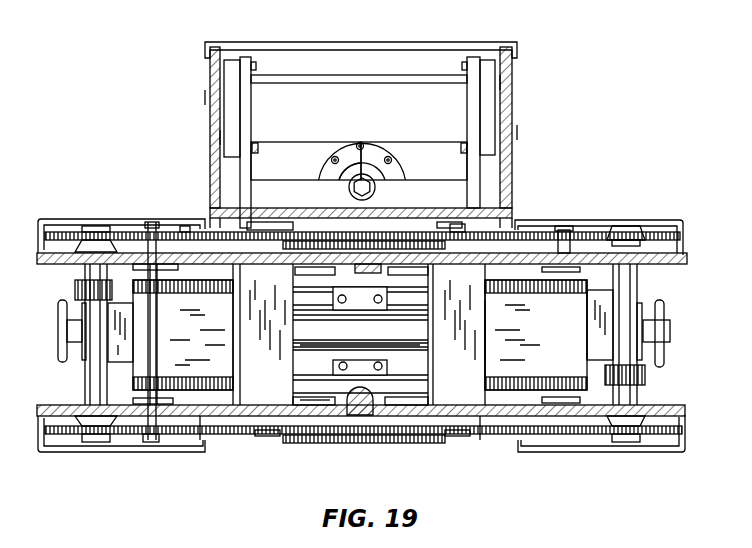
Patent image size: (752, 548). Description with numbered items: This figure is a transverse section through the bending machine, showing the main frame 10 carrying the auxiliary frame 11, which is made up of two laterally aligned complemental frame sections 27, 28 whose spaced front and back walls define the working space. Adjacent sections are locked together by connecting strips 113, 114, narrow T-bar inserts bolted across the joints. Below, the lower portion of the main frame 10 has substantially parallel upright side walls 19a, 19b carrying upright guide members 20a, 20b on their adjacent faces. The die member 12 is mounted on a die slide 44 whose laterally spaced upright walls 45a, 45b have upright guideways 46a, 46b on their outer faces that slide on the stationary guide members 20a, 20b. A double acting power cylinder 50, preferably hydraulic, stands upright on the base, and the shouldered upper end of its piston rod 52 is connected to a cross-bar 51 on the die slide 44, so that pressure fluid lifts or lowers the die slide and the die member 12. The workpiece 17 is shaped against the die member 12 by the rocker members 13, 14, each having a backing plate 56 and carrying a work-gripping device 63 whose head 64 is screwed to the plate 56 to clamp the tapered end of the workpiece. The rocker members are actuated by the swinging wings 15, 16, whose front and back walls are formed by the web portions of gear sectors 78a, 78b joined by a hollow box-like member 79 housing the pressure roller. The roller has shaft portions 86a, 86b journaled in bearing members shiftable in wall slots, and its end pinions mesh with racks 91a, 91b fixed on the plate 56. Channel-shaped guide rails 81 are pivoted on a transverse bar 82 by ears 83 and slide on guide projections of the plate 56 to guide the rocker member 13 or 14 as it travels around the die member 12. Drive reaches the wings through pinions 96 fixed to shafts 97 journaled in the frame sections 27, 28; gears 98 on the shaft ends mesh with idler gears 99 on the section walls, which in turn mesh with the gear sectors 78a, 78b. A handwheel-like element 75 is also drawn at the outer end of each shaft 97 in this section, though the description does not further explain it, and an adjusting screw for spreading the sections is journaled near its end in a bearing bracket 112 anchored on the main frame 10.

The main frame 10 is at (518, 108).
The auxiliary frame 11 is at (678, 408).
The die member 12 is at (413, 355).
The rocker member 13 is at (136, 378).
The rocker member 14 is at (590, 312).
The swinging wing 15 is at (217, 437).
The swinging wing 16 is at (492, 445).
The workpiece 17 is at (412, 336).
The upright side wall 19a is at (208, 97).
The upright side wall 19b is at (513, 137).
The upright guide member 20a is at (221, 135).
The upright guide member 20b is at (505, 80).
The frame section 27 is at (148, 255).
The frame section 28 is at (686, 258).
The die slide 44 is at (350, 78).
The upright wall 45a is at (255, 165).
The upright wall 45b is at (472, 172).
The upright guideway 46a is at (238, 70).
The upright guideway 46b is at (485, 68).
The power cylinder 50 is at (336, 174).
The cross-bar 51 is at (363, 168).
The piston rod 52 is at (372, 185).
The backing plate 56 is at (142, 336).
The work-gripping device 63 is at (80, 355).
The head 64 is at (565, 250).
The handwheel 75 is at (62, 322).
The gear sector 78a is at (220, 440).
The gear sector 78b is at (183, 232).
The hollow member 79 is at (480, 350).
The guide rail 81 is at (318, 404).
The bar 82 is at (150, 350).
The ear 83 is at (147, 266).
The shaft portion 86a is at (264, 434).
The shaft portion 86b is at (457, 230).
The rack 91a is at (552, 383).
The rack 91b is at (490, 292).
The pinion 96 is at (75, 290).
The shaft 97 is at (90, 395).
The gear 98 is at (92, 232).
The idler gear 99 is at (57, 232).
The bearing bracket 112 is at (382, 403).
The connecting strip 113 is at (338, 445).
The connecting strip 114 is at (372, 273).